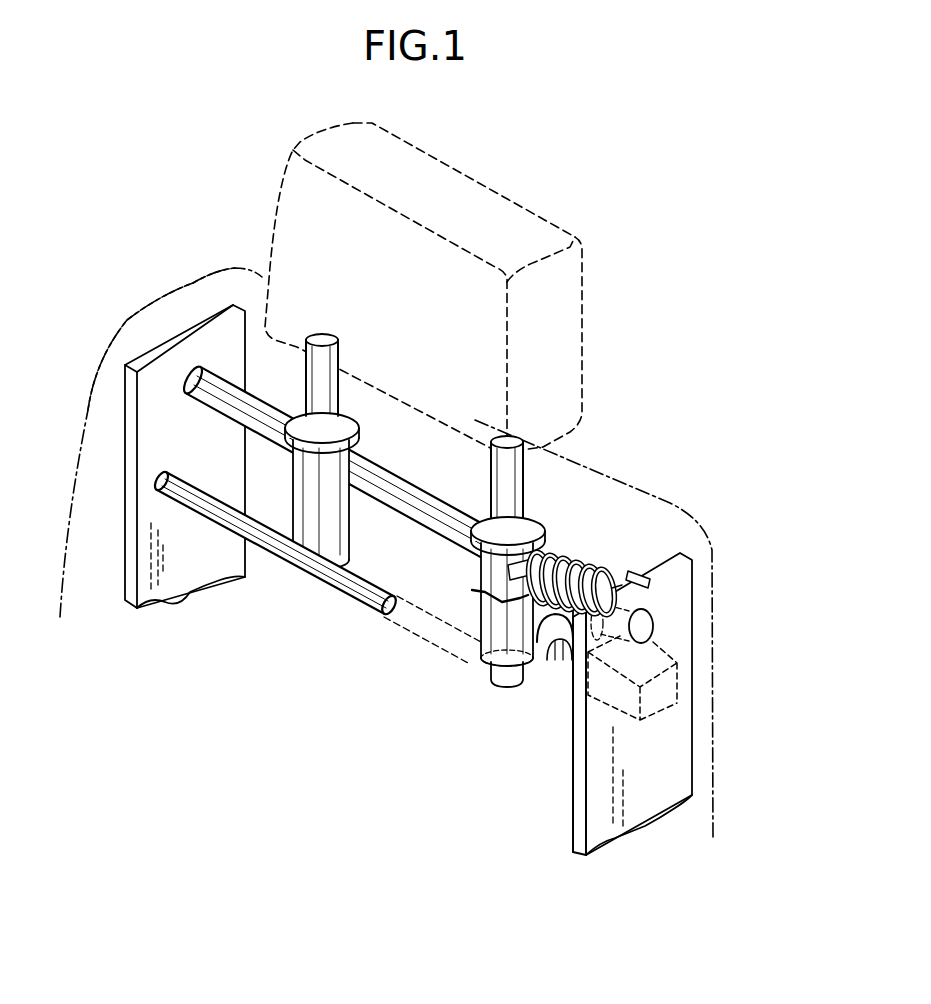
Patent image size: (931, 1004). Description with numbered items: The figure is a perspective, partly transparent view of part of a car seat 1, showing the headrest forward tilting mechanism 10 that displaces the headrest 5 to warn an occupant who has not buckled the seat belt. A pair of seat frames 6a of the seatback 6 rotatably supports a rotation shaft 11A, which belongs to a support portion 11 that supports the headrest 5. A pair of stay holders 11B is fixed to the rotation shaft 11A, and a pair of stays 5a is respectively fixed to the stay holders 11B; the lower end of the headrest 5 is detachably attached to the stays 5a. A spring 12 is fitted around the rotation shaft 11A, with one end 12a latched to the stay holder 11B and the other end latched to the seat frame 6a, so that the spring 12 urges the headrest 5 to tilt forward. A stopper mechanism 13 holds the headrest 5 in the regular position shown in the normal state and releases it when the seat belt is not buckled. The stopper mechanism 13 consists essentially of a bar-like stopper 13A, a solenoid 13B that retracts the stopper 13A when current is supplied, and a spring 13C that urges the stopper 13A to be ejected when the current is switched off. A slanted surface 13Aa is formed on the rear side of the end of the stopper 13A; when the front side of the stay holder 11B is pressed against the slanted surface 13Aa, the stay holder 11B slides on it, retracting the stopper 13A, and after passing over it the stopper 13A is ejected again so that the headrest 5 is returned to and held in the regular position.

The car seat 1 is at (728, 546).
The headrest 5 is at (472, 175).
The stays 5a is at (340, 347).
The seatback 6 is at (200, 283).
The seat frames 6a is at (127, 412).
The headrest forward tilting mechanism 10 is at (471, 594).
The support portion 11 is at (388, 538).
The rotation shaft 11A is at (400, 490).
The stay holder 11B is at (427, 690).
The spring 12 is at (595, 573).
The one end of the spring 12a is at (472, 591).
The stopper mechanism 13 is at (603, 686).
The stopper 13A is at (537, 662).
The slanted surface 13Aa is at (480, 657).
The solenoid 13B is at (680, 685).
The spring 13C is at (564, 661).